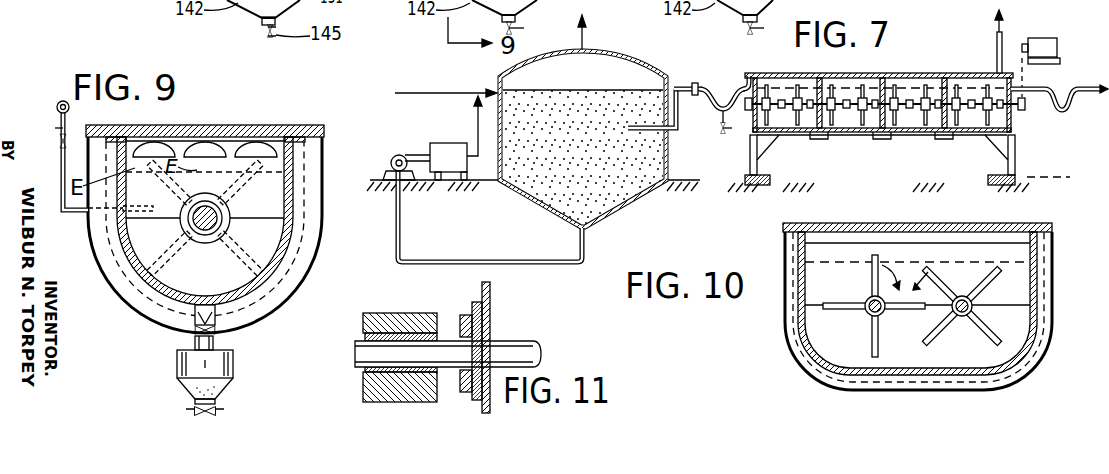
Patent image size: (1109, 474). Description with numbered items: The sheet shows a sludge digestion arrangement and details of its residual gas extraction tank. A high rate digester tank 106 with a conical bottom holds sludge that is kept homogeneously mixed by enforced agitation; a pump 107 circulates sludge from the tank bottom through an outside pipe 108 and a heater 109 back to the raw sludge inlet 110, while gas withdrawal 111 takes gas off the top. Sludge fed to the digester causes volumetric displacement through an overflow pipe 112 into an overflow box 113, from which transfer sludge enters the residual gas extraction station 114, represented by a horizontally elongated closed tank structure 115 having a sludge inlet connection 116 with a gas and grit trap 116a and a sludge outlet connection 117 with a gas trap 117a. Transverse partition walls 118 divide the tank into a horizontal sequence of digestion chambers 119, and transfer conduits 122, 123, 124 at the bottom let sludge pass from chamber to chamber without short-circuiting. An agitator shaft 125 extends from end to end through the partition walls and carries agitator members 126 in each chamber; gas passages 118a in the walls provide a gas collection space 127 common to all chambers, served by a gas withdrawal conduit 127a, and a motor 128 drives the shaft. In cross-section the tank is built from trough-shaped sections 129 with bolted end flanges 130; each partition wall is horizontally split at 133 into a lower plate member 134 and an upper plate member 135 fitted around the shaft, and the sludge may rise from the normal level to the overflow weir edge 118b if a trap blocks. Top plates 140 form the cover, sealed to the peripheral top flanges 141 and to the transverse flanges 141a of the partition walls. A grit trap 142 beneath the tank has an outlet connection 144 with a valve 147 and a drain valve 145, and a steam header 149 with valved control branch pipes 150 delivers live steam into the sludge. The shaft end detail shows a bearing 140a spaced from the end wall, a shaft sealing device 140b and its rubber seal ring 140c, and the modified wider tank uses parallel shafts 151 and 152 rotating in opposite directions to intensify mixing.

In FIG. 7, the high rate digester tank 106 is at (651, 65).
In FIG. 7, the pump 107 is at (397, 155).
In FIG. 7, the outside pipe 108 is at (433, 263).
In FIG. 7, the heater 109 is at (452, 143).
In FIG. 7, the raw sludge inlet 110 is at (490, 91).
In FIG. 7, the gas withdrawal 111 is at (584, 48).
In FIG. 7, the overflow pipe 112 is at (675, 133).
In FIG. 7, the overflow box 113 is at (693, 84).
In FIG. 7, the residual gas extraction station 114 is at (925, 66).
In FIG. 7, the tank structure 115 is at (742, 80).
In FIG. 7, the sludge inlet connection 116 is at (710, 87).
In FIG. 7, the gas and grit trap 116a is at (722, 132).
In FIG. 7, the sludge outlet connection 117 is at (1082, 86).
In FIG. 7, the gas trap 117a is at (1063, 111).
In FIG. 7, the transverse partition walls 118 is at (815, 116).
In FIG. 9, the gas passages 118a is at (201, 151).
In FIG. 9, the overflow weir edge 118b is at (206, 158).
In FIG. 7, the digestion chambers 119 is at (826, 88).
In FIG. 7, the transfer conduit 122 is at (823, 139).
In FIG. 7, the transfer conduit 123 is at (887, 139).
In FIG. 7, the transfer conduit 124 is at (950, 139).
In FIG. 7, the agitator shaft 125 is at (1013, 106).
In FIG. 9, the agitator shaft 125 is at (205, 243).
In FIG. 7, the agitator members 126 is at (1009, 118).
In FIG. 9, the agitator members 126 is at (240, 250).
In FIG. 7, the gas collection space 127 is at (907, 84).
In FIG. 7, the gas withdrawal conduit 127a is at (1002, 38).
In FIG. 7, the motor 128 is at (1047, 42).
In FIG. 9, the trough-shaped sections 129 is at (291, 199).
In FIG. 9, the end flanges 130 is at (134, 293).
In FIG. 9, the horizontal split 133 is at (244, 211).
In FIG. 9, the lower plate member 134 is at (157, 241).
In FIG. 9, the upper plate member 135 is at (157, 201).
In FIG. 9, the top plates 140 is at (236, 127).
In FIG. 11, the bearing 140a is at (363, 335).
In FIG. 11, the shaft sealing device 140b is at (459, 320).
In FIG. 11, the rubber seal ring 140c is at (490, 333).
In FIG. 9, the peripheral top flanges 141 is at (321, 137).
In FIG. 9, the transverse flanges 141a is at (271, 134).
In FIG. 9, the grit trap 142 is at (234, 365).
In FIG. 9, the outlet connection 144 is at (215, 345).
In FIG. 9, the drain valve 145 is at (200, 412).
In FIG. 9, the valve 147 is at (195, 329).
In FIG. 9, the steam header 149 is at (57, 104).
In FIG. 9, the valved control branch pipes 150 is at (60, 172).
In FIG. 10, the parallel agitator shaft 151 is at (867, 313).
In FIG. 10, the parallel agitator shaft 152 is at (965, 317).